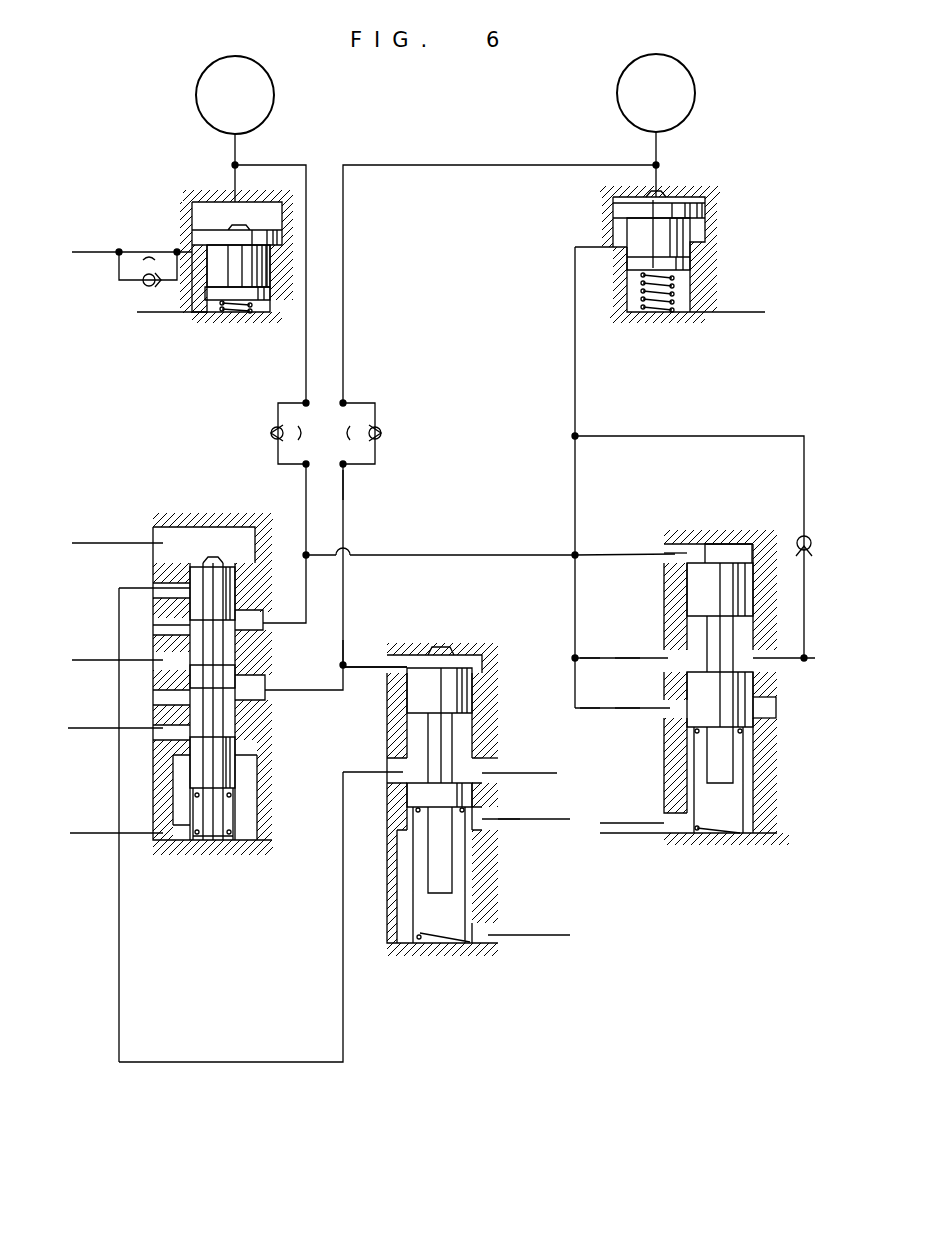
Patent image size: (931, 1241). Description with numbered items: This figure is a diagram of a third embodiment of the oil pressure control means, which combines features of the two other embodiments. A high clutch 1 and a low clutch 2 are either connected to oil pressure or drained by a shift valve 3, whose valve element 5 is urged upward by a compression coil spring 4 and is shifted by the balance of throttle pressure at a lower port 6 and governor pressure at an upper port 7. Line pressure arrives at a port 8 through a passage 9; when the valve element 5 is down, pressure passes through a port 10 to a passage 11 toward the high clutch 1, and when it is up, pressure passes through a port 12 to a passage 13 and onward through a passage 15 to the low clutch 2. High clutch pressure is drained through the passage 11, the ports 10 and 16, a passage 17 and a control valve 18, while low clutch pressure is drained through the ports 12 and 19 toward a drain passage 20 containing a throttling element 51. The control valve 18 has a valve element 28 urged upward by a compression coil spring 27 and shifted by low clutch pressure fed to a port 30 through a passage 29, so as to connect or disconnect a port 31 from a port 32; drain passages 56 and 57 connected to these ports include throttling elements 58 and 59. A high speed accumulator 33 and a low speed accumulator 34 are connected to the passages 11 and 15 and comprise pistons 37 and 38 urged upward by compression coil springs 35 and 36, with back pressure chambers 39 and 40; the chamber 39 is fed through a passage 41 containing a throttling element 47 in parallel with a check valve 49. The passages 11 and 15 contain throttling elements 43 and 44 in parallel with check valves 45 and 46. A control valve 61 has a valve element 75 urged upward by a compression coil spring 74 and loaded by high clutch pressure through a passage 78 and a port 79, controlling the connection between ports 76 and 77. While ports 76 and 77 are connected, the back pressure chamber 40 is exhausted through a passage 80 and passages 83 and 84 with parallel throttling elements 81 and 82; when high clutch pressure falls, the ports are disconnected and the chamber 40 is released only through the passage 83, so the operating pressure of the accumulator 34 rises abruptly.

The high clutch 1 is at (263, 122).
The low clutch 2 is at (626, 120).
The shift valve 3 is at (203, 513).
The compression coil spring 4 is at (240, 842).
The valve element 5 is at (232, 765).
The lower port 6 is at (150, 840).
The upper port 7 is at (158, 541).
The port 8 is at (158, 646).
The passage 9 is at (96, 662).
The port 10 is at (265, 628).
The passage 11 is at (306, 505).
The port 12 is at (268, 700).
The passage 13 is at (343, 505).
The passage 15 is at (386, 493).
The port 16 is at (140, 592).
The passage 17 is at (220, 1062).
The control valve 18 is at (444, 633).
The drain port 19 is at (150, 734).
The drain passage 20 is at (96, 730).
The compression coil spring 27 is at (470, 945).
The valve element 28 is at (465, 662).
The passage 29 is at (362, 662).
The port 30 is at (396, 672).
The port 31 is at (386, 760).
The port 32 is at (485, 812).
The high speed accumulator 33 is at (207, 190).
The low speed accumulator 34 is at (672, 193).
The compression coil spring 35 is at (228, 312).
The compression coil spring 36 is at (643, 300).
The piston 37 is at (217, 237).
The piston 38 is at (640, 208).
The back pressure chamber 39 is at (270, 262).
The back pressure chamber 40 is at (613, 235).
The passage 41 is at (110, 255).
The throttling element 43 is at (318, 433).
The throttling element 44 is at (335, 438).
The check valve 45 is at (271, 435).
The check valve 46 is at (380, 435).
The throttling element 47 is at (149, 246).
The check valve 49 is at (143, 283).
The throttling element 51 is at (142, 720).
The drain passage 56 is at (520, 777).
The drain passage 57 is at (555, 824).
The throttling element 58 is at (520, 765).
The throttling element 59 is at (512, 824).
The control valve 61 is at (718, 518).
The compression coil spring 74 is at (692, 833).
The valve element 75 is at (776, 710).
The port 76 is at (667, 666).
The port 77 is at (670, 718).
The passage 78 is at (465, 555).
The port 79 is at (668, 564).
The passage 80 is at (575, 383).
The throttling element 81 is at (624, 665).
The throttling element 82 is at (624, 716).
The passage 83 is at (592, 658).
The passage 84 is at (592, 708).